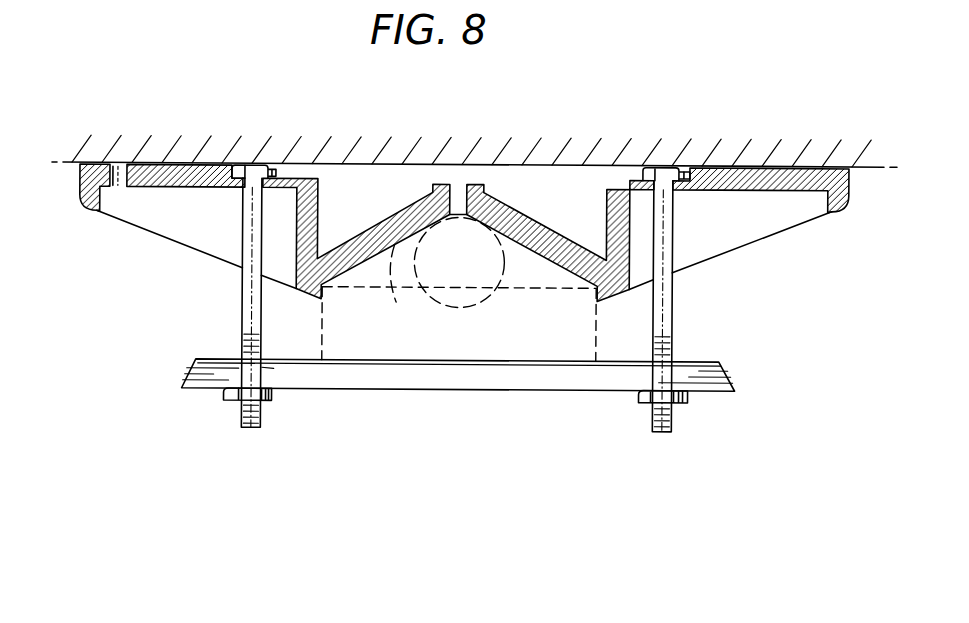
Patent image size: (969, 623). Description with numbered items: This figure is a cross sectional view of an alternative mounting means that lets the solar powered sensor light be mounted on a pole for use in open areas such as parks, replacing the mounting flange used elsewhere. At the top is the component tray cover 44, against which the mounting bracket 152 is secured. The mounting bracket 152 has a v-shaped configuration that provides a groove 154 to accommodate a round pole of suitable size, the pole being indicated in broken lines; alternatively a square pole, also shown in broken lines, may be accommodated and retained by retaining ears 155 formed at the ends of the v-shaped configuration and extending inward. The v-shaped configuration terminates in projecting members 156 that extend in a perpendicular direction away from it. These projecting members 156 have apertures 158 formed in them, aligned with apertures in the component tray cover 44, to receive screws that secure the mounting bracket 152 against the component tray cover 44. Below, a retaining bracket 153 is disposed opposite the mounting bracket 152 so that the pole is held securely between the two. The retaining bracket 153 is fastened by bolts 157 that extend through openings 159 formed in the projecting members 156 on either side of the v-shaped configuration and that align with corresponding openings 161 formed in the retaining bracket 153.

The component tray cover 44 is at (745, 148).
The mounting bracket 152 is at (96, 320).
The retaining bracket 153 is at (735, 380).
The groove 154 is at (459, 289).
The retaining ears 155 is at (305, 297).
The projecting members 156 is at (143, 186).
The bolts 157 is at (243, 310).
The apertures 158 is at (127, 170).
The openings 159 is at (233, 180).
The openings 161 is at (278, 372).